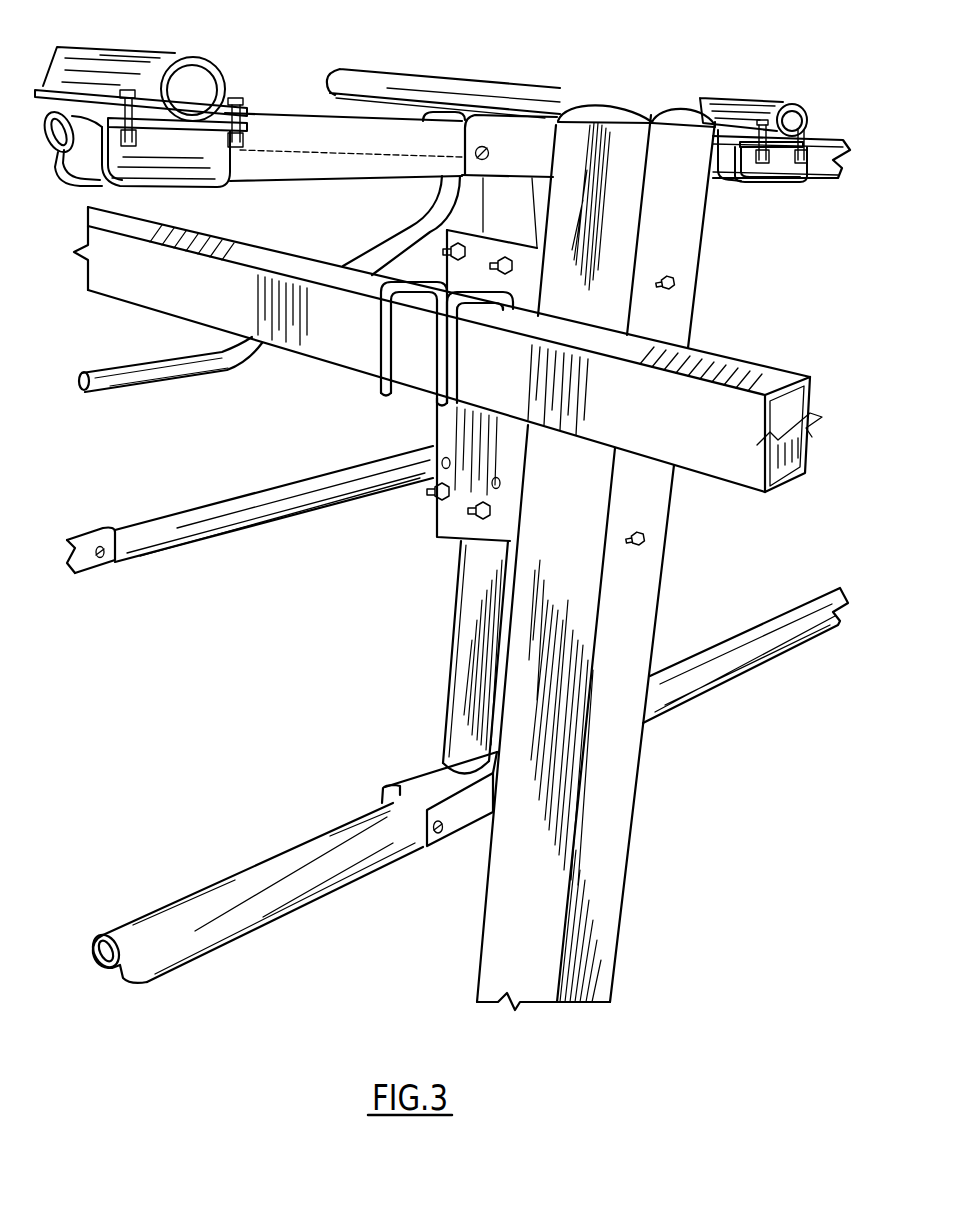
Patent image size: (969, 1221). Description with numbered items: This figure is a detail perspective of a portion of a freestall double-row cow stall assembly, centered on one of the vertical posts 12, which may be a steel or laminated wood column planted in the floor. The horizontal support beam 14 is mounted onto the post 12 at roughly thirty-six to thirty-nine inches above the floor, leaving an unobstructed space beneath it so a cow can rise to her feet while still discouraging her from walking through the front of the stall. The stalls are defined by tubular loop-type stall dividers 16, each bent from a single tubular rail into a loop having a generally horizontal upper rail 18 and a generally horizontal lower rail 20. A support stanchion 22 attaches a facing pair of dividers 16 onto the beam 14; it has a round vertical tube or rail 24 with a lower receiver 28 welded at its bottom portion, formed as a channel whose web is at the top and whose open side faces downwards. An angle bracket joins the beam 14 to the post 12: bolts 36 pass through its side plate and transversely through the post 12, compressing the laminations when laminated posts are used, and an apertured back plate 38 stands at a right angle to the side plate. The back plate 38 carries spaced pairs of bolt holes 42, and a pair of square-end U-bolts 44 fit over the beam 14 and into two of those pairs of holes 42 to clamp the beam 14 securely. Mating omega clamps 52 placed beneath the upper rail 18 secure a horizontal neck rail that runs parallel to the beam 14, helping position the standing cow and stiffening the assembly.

The vertical post 12 is at (603, 843).
The horizontal support beam 14 is at (755, 380).
The stall divider 16 is at (158, 357).
The upper rail 18 is at (300, 177).
The lower rail 20 is at (203, 900).
The support stanchion 22 is at (449, 660).
The vertical tube or rail 24 is at (453, 705).
The lower receiver 28 is at (92, 530).
The bolt 36 is at (678, 284).
The apertured back plate 38 is at (457, 447).
The bolt holes 42 is at (494, 485).
The square-end U-bolt 44 is at (386, 396).
The omega clamp 52 is at (150, 58).